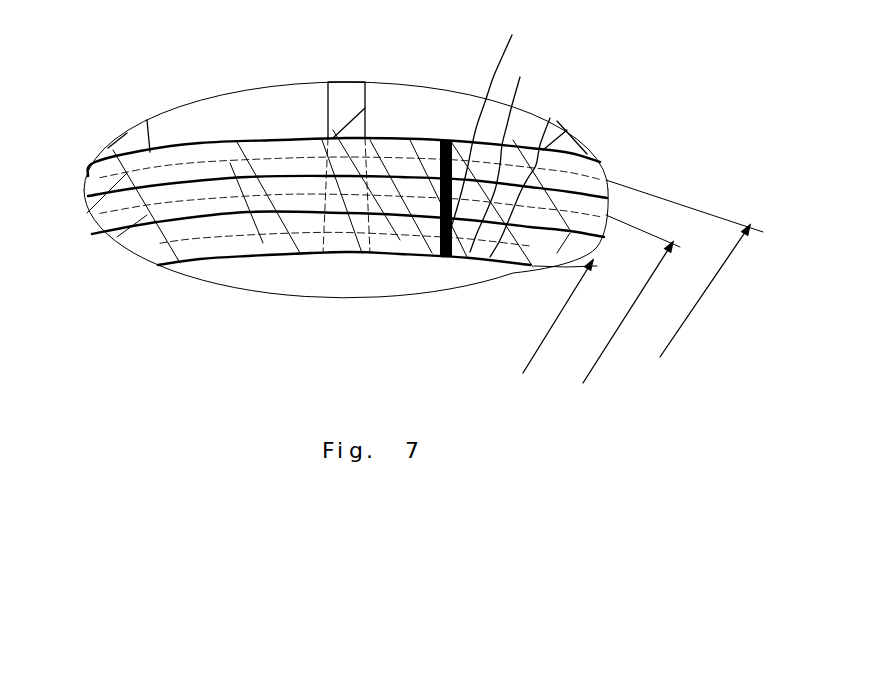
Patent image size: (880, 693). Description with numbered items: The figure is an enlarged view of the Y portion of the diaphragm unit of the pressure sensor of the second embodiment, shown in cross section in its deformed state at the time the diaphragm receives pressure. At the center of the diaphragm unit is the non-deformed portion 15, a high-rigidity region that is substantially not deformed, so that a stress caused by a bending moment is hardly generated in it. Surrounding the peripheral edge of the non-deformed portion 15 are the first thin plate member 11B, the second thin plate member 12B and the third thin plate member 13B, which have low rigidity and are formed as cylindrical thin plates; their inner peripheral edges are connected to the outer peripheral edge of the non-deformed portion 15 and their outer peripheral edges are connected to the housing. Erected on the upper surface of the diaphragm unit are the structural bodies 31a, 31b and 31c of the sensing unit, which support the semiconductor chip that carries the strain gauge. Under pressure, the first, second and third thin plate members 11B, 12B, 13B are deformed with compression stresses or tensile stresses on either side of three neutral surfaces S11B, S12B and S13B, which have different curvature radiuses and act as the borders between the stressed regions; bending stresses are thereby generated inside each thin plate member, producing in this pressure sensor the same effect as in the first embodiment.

The non-deformed portion 15 is at (340, 253).
The first thin plate member 11B is at (147, 210).
The second thin plate member 12B is at (160, 247).
The third thin plate member 13B is at (160, 245).
The neutral surface S11B is at (505, 137).
The neutral surface S12B is at (525, 154).
The neutral surface S13B is at (545, 174).
The structural body 31a is at (123, 137).
The structural body 31b is at (352, 92).
The structural body 31c is at (587, 153).
The Y portion Y is at (217, 90).